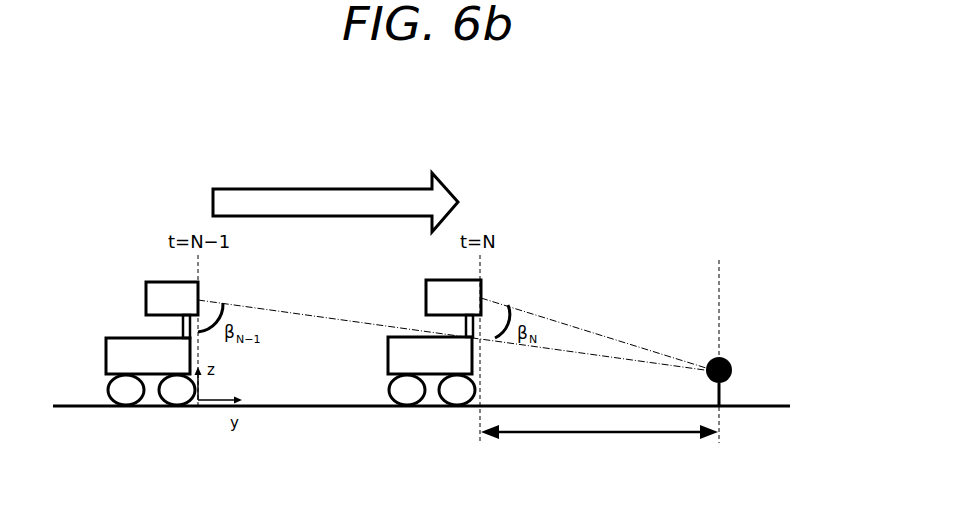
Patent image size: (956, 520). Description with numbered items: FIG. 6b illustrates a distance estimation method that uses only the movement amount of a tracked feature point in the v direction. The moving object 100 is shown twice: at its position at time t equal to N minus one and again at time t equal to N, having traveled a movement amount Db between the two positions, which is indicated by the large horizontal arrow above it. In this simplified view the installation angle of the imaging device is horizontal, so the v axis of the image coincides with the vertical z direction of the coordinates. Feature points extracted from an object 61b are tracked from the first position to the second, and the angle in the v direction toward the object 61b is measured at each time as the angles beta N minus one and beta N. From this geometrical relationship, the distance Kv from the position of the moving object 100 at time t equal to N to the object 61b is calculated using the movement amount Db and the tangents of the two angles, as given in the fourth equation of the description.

The moving object 100 is at (122, 337).
The object 61b is at (721, 392).
The movement amount Db is at (335, 197).
The distance Kv is at (599, 443).